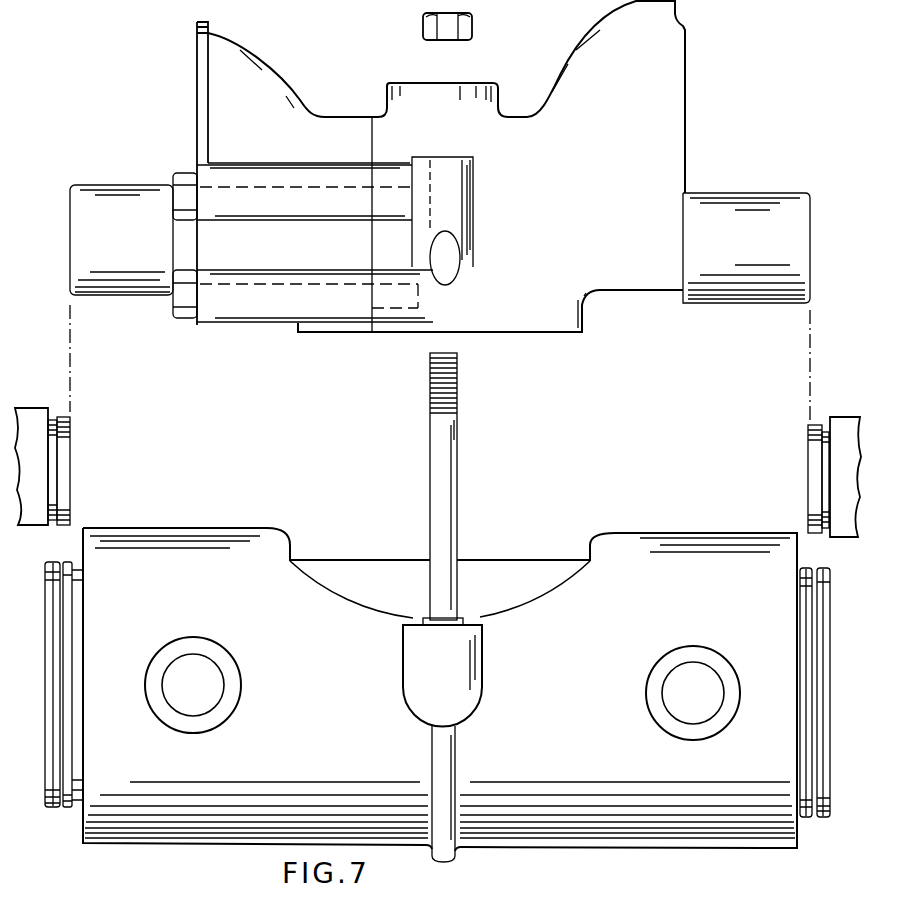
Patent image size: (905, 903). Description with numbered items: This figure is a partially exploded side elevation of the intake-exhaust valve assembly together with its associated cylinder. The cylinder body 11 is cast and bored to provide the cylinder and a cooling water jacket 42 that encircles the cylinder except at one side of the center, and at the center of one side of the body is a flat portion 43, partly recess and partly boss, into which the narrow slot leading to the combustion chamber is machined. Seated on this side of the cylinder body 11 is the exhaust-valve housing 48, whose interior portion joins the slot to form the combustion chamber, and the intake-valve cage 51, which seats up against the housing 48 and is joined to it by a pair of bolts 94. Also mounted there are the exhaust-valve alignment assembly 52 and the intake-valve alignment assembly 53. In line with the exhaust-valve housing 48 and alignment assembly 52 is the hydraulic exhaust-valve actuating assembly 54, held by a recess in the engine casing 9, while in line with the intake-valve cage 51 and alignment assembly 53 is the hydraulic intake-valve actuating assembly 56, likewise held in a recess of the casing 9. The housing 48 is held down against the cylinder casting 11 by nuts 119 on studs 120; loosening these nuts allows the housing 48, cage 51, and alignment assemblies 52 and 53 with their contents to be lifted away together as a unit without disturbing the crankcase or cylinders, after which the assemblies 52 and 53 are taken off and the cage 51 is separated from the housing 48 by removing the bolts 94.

The engine casing 9 is at (33, 407).
The cylinder body 11 is at (576, 741).
The water jacket 42 is at (205, 672).
The flat portion 43 is at (334, 560).
The exhaust-valve housing 48 is at (690, 110).
The intake-valve cage 51 is at (194, 90).
The exhaust-valve alignment assembly 52 is at (748, 191).
The intake-valve alignment assembly 53 is at (104, 183).
The hydraulic exhaust-valve actuating assembly 54 is at (815, 425).
The hydraulic intake-valve actuating assembly 56 is at (72, 452).
The bolts 94 is at (188, 170).
The nuts 119 is at (473, 22).
The studs 120 is at (458, 456).